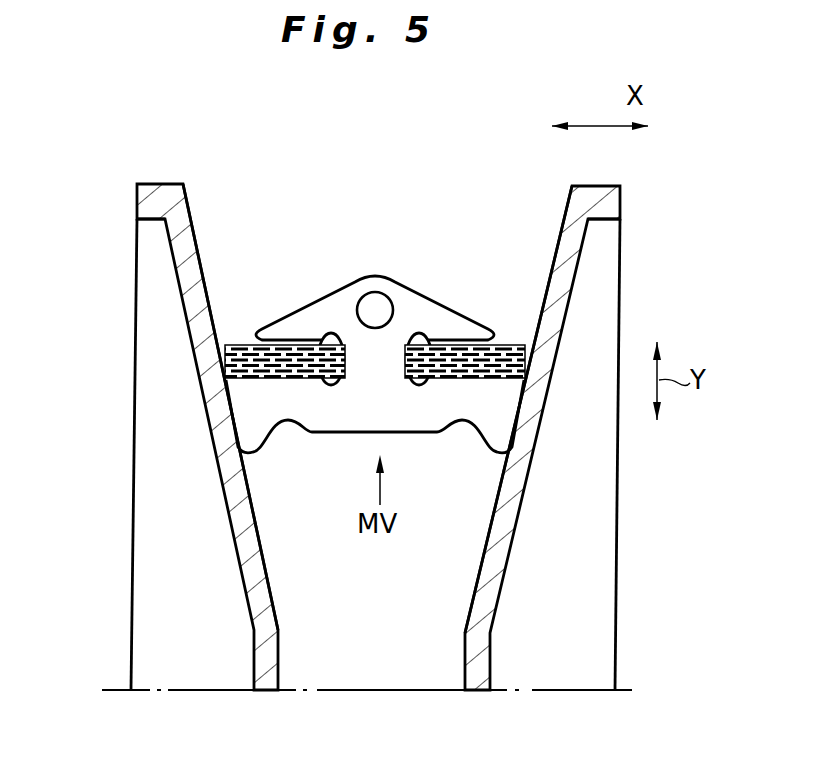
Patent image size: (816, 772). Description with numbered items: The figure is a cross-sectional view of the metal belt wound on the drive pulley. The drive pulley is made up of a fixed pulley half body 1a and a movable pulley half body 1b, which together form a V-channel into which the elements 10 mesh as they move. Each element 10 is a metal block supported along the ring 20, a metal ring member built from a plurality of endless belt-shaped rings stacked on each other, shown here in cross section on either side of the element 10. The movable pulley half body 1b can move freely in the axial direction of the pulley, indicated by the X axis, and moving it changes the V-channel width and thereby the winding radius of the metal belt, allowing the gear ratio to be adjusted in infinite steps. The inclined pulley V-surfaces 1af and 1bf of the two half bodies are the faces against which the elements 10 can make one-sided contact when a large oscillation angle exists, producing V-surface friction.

The fixed pulley half body 1a is at (186, 219).
The pulley V-surface 1af is at (200, 252).
The movable pulley half body 1b is at (573, 224).
The pulley V-surface 1bf is at (554, 262).
The element 10 is at (408, 278).
The ring 20 is at (246, 344).